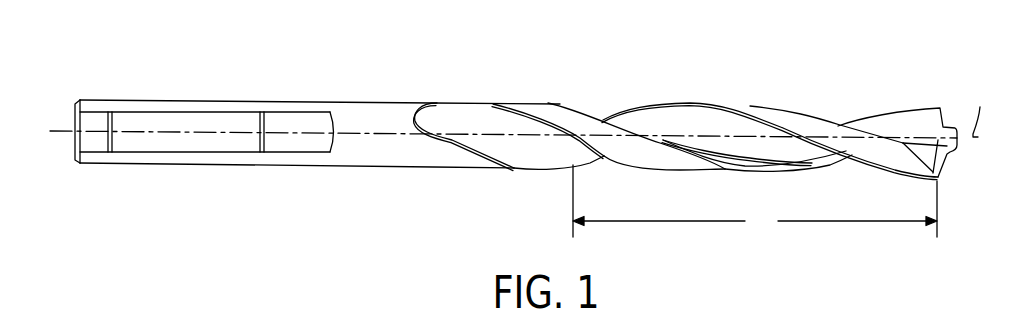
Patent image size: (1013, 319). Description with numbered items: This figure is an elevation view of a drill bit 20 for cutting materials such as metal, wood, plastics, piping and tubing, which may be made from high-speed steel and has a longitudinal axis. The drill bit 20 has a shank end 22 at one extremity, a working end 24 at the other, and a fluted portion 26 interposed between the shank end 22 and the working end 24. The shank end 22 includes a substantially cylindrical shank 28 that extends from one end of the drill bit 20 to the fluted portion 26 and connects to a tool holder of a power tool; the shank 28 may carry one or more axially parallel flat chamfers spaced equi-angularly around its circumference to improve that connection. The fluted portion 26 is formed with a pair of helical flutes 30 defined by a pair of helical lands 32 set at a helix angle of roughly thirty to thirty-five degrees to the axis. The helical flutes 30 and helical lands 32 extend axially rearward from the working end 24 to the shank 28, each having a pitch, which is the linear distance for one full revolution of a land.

The drill bit 20 is at (524, 143).
The shank end 22 is at (317, 154).
The working end 24 is at (957, 178).
The fluted portion 26 is at (706, 165).
The shank 28 is at (162, 122).
The helical flutes 30 is at (538, 152).
The helical lands 32 is at (571, 122).